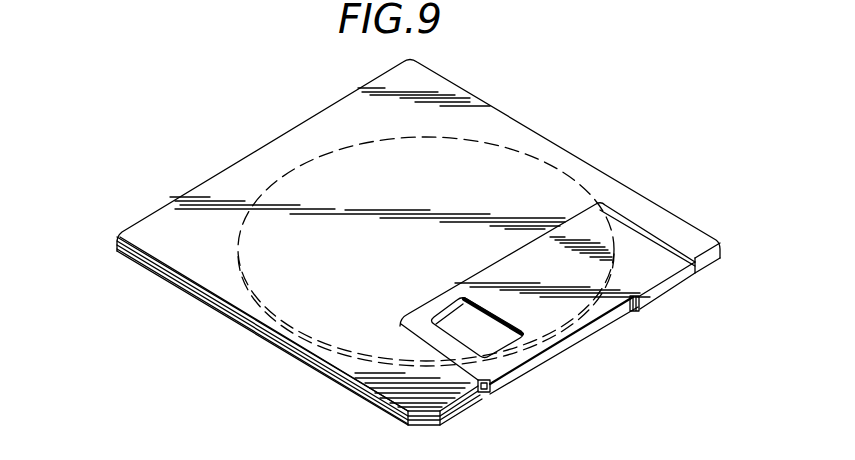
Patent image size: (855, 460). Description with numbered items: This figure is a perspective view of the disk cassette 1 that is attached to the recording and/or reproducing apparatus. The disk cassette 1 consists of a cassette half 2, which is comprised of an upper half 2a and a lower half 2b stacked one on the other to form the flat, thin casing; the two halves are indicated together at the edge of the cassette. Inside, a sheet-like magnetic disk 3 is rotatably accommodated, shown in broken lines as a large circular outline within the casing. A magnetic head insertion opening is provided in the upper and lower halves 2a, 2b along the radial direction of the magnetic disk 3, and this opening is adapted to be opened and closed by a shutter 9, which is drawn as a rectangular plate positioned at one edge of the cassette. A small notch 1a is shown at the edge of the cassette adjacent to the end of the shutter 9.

The disk cassette 1 is at (493, 118).
The notch 1a is at (488, 392).
The cassette half 2 is at (221, 321).
The upper half 2a is at (118, 244).
The lower half 2b is at (118, 242).
The magnetic disk 3 is at (302, 173).
The shutter 9 is at (594, 328).